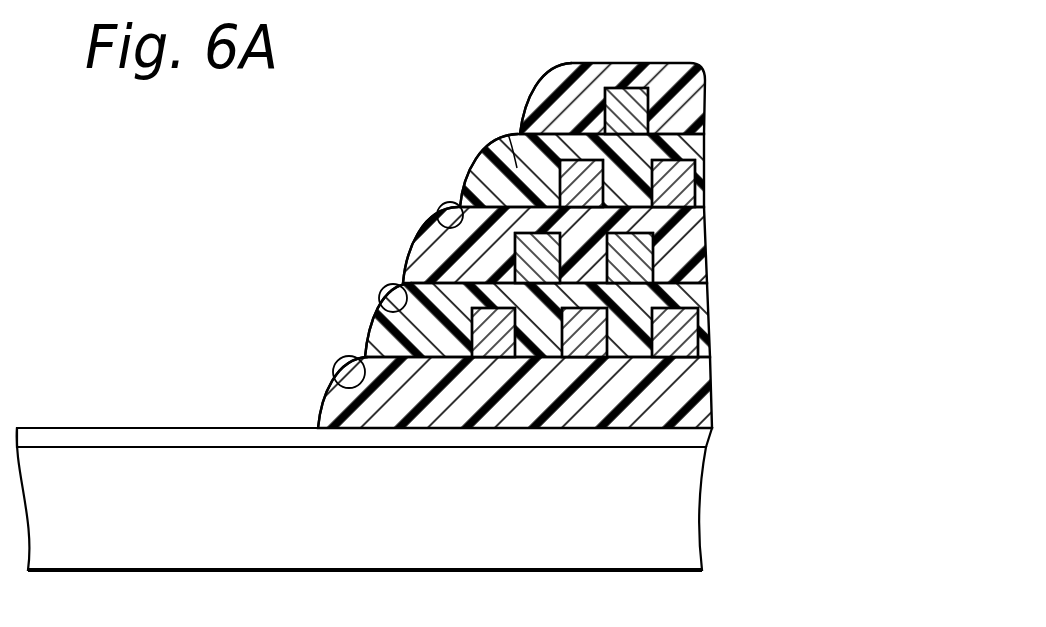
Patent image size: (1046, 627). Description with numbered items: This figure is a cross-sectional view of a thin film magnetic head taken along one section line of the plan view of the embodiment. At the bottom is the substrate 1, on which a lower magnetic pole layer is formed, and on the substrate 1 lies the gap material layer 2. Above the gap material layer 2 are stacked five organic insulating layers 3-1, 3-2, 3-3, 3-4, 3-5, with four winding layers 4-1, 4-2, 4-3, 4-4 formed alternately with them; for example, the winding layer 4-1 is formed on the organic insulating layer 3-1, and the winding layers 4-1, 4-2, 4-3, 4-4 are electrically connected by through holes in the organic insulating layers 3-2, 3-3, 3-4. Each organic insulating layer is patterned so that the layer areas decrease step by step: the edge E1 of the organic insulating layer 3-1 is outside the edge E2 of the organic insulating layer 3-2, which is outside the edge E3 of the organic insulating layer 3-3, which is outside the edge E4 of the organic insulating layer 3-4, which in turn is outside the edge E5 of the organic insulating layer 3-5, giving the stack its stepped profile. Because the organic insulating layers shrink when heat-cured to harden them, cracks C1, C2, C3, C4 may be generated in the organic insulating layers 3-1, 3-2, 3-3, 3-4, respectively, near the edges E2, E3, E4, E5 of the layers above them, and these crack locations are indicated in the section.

The substrate 1 is at (683, 515).
The gap material layer 2 is at (700, 432).
The organic insulating layer 3-1 is at (690, 380).
The organic insulating layer 3-2 is at (680, 298).
The organic insulating layer 3-3 is at (693, 252).
The organic insulating layer 3-4 is at (695, 147).
The organic insulating layer 3-5 is at (695, 103).
The winding layer 4-1 is at (680, 333).
The winding layer 4-2 is at (670, 270).
The winding layer 4-3 is at (685, 178).
The winding layer 4-4 is at (632, 100).
The edge of organic insulating layer 3-1 E1 is at (318, 427).
The edge of organic insulating layer 3-2 E2 is at (365, 357).
The edge of organic insulating layer 3-3 E3 is at (405, 283).
The edge of organic insulating layer 3-4 E4 is at (463, 208).
The edge of organic insulating layer 3-5 E5 is at (520, 134).
The crack C1 is at (338, 385).
The crack C2 is at (382, 288).
The crack C3 is at (441, 208).
The crack C4 is at (508, 134).